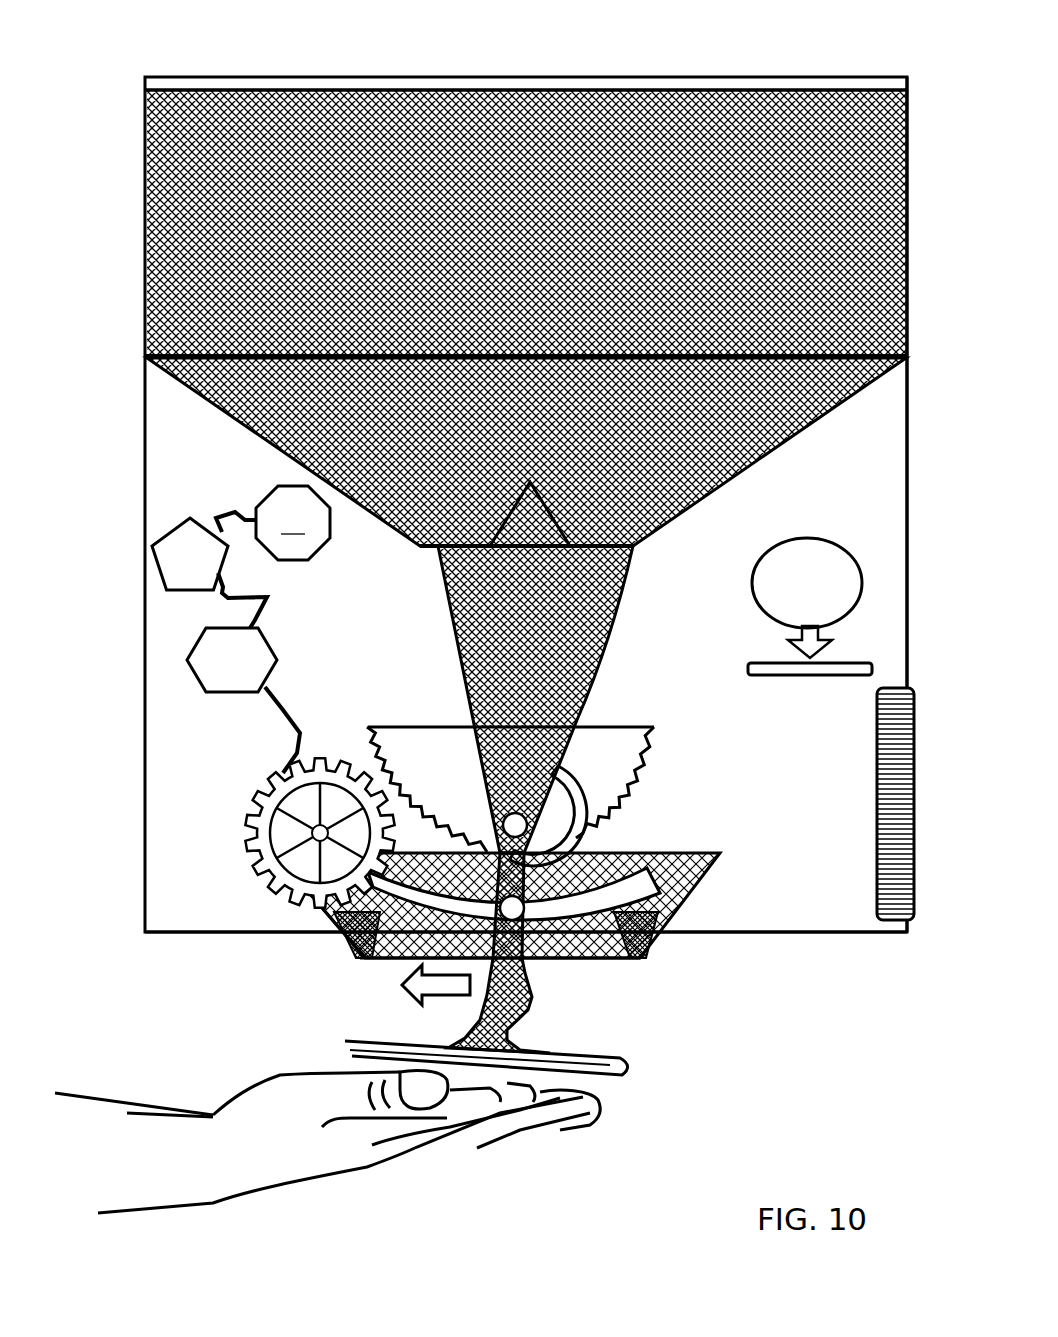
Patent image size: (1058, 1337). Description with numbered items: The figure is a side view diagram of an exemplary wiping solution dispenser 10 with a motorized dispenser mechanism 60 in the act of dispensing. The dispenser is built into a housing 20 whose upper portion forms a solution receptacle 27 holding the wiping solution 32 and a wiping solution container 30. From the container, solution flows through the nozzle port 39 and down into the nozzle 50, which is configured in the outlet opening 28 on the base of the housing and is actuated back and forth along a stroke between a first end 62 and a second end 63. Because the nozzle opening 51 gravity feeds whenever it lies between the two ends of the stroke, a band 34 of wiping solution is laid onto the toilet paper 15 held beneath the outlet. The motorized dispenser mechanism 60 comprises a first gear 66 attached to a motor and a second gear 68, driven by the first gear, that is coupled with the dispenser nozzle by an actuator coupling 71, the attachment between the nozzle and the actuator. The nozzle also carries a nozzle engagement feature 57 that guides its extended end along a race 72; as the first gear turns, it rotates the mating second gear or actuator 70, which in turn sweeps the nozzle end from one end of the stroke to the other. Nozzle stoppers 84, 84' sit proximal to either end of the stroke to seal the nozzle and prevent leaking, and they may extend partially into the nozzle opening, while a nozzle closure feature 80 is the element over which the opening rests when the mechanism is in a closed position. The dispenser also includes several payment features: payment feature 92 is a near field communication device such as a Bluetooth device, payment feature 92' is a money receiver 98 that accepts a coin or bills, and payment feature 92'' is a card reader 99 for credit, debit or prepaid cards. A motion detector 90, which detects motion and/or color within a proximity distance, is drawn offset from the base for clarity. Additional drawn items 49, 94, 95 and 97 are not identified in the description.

The wiping solution dispenser 10 is at (141, 136).
The solution receptacle 27 is at (850, 145).
The wiping solution 32 is at (790, 135).
The housing 20 is at (870, 262).
The wiping solution container 30 is at (752, 408).
The deflector 49 is at (658, 530).
The nozzle port 39 is at (437, 561).
The nozzle 50 is at (608, 640).
The second gear 68 is at (647, 727).
The motorized dispenser mechanism 60 is at (353, 740).
The actuator 70 is at (656, 742).
The race 72 is at (650, 853).
The first end of stroke 62 is at (700, 880).
The second end of stroke 63 is at (303, 872).
The nozzle closure feature 80 is at (665, 957).
The nozzle stopper 84 is at (327, 944).
The nozzle stopper 84' is at (668, 961).
The nozzle opening 51 is at (525, 957).
The actuator coupling 71 is at (503, 818).
The nozzle engagement feature 57 is at (558, 937).
The outlet opening 28 is at (382, 962).
The band of wiping solution 34 is at (455, 1040).
The toilet paper 15 is at (585, 1052).
The control linkage 94 is at (220, 498).
The pentagon button 95 is at (178, 570).
The payment feature 92 is at (293, 548).
The octagon label 97 is at (292, 523).
The motion detector 90 is at (224, 671).
The first gear 66 is at (280, 778).
The money receiver 98 is at (748, 666).
The payment feature 92' is at (801, 693).
The payment feature 92'' is at (854, 804).
The card reader 99 is at (880, 832).